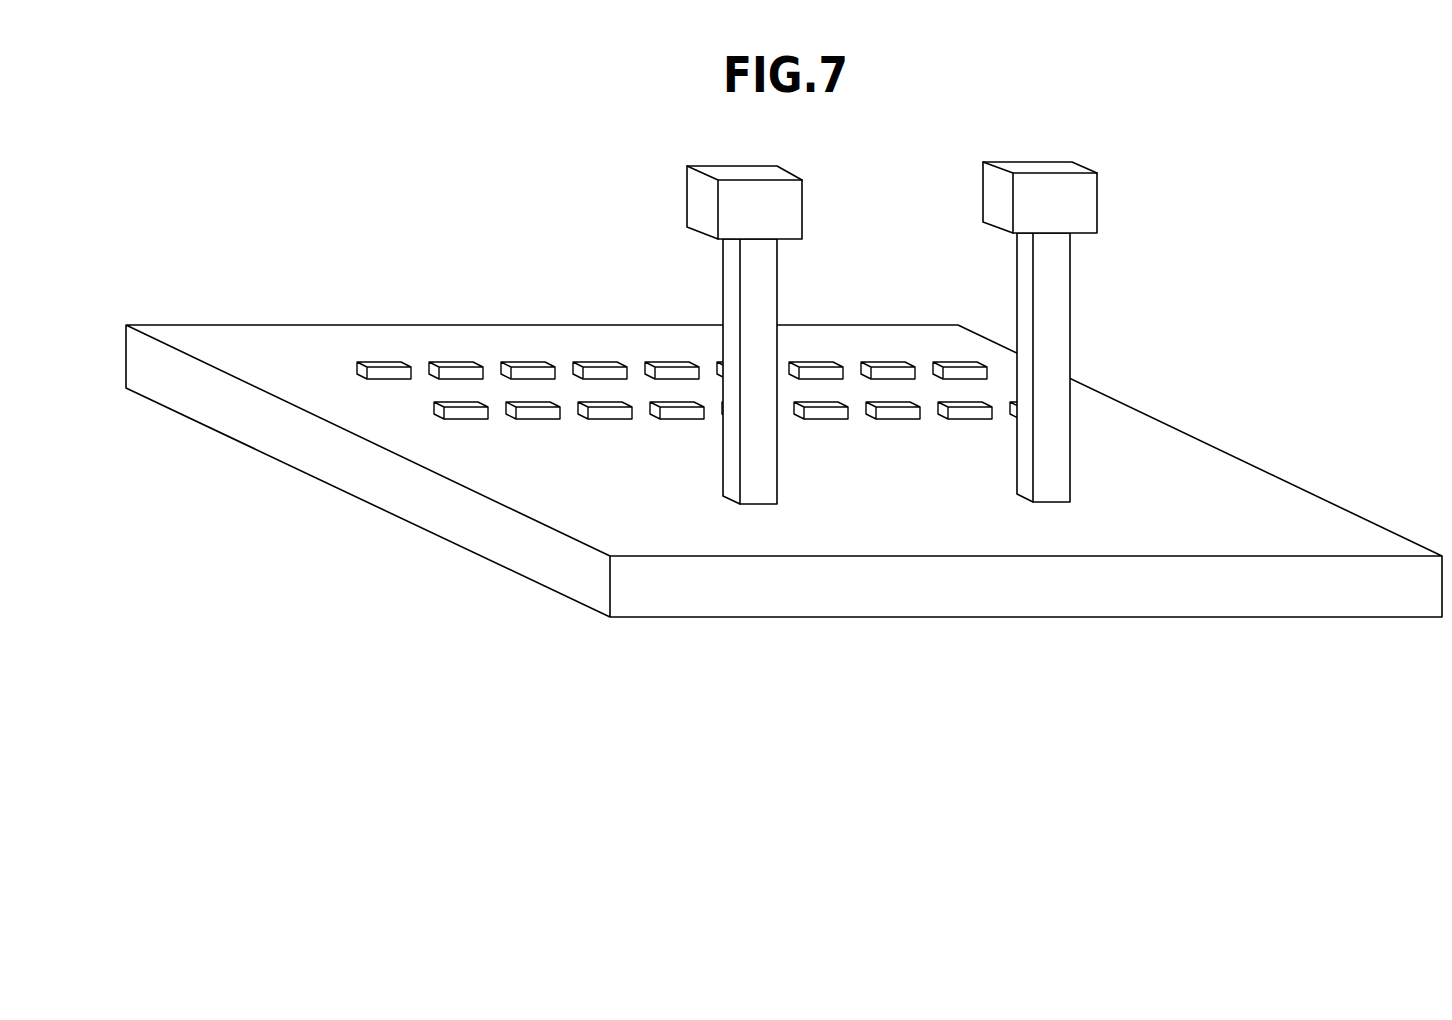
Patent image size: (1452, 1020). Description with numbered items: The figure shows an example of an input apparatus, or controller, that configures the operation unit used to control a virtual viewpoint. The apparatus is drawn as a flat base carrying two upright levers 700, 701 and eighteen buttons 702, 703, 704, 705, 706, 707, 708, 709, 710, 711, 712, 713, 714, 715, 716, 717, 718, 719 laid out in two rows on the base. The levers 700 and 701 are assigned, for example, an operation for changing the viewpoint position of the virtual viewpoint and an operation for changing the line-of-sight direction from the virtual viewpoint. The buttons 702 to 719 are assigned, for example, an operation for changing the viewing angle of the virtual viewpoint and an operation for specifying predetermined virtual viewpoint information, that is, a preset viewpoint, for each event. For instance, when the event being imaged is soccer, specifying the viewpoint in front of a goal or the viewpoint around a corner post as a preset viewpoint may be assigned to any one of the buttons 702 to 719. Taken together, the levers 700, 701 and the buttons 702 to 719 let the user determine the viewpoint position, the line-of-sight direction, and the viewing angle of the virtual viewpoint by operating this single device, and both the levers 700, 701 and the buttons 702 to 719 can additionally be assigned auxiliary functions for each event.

The lever 700 is at (760, 495).
The lever 701 is at (1053, 493).
The button 702 is at (385, 362).
The button 703 is at (458, 362).
The button 704 is at (530, 362).
The button 705 is at (600, 362).
The button 706 is at (673, 362).
The button 707 is at (722, 362).
The button 708 is at (813, 361).
The button 709 is at (887, 361).
The button 710 is at (960, 361).
The button 711 is at (460, 415).
The button 712 is at (537, 415).
The button 713 is at (608, 415).
The button 714 is at (682, 415).
The button 715 is at (722, 408).
The button 716 is at (825, 415).
The button 717 is at (895, 415).
The button 718 is at (966, 415).
The button 719 is at (1011, 410).